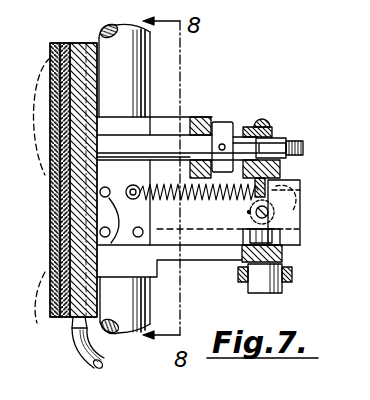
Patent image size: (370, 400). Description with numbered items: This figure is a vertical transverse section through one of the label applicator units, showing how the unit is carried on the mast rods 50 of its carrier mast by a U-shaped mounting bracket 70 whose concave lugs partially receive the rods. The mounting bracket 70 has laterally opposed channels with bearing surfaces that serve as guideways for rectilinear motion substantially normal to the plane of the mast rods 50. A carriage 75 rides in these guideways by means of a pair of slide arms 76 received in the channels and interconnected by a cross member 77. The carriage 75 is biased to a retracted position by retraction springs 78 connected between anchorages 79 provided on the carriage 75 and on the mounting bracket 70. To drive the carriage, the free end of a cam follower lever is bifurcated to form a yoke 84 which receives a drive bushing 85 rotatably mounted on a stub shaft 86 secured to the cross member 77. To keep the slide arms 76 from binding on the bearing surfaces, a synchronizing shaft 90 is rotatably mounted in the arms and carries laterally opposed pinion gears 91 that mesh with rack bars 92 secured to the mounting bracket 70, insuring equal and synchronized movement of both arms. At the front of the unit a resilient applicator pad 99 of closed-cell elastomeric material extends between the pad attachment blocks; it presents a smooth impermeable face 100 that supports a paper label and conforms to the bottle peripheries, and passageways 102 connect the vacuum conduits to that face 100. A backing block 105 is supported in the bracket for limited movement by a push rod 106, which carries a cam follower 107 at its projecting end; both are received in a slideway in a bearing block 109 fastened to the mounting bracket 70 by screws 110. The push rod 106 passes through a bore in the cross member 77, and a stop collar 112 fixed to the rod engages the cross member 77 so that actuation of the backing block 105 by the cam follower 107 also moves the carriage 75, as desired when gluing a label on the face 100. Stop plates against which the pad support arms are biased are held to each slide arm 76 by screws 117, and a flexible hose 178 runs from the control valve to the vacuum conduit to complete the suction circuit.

The mast rods 50 is at (145, 60).
The mounting bracket 70 is at (160, 256).
The carriage 75 is at (167, 125).
The slide arms 76 is at (218, 237).
The cross member 77 is at (250, 250).
The retraction springs 78 is at (160, 205).
The anchorages 79 is at (131, 186).
The yoke 84 is at (283, 281).
The drive bushing 85 is at (264, 286).
The stub shaft 86 is at (250, 222).
The synchronizing shaft 90 is at (248, 212).
The pinion gears 91 is at (300, 224).
The rack bars 92 is at (298, 212).
The resilient applicator pad 99 is at (58, 43).
The impermeable face 100 is at (50, 58).
The passageways 102 is at (43, 201).
The backing block 105 is at (80, 43).
The push rod 106 is at (187, 142).
The cam follower 107 is at (303, 150).
The bearing block 109 is at (271, 128).
The screws 110 is at (262, 118).
The stop collar 112 is at (228, 123).
The screws 117 is at (125, 216).
The flexible hoses 178 is at (103, 354).